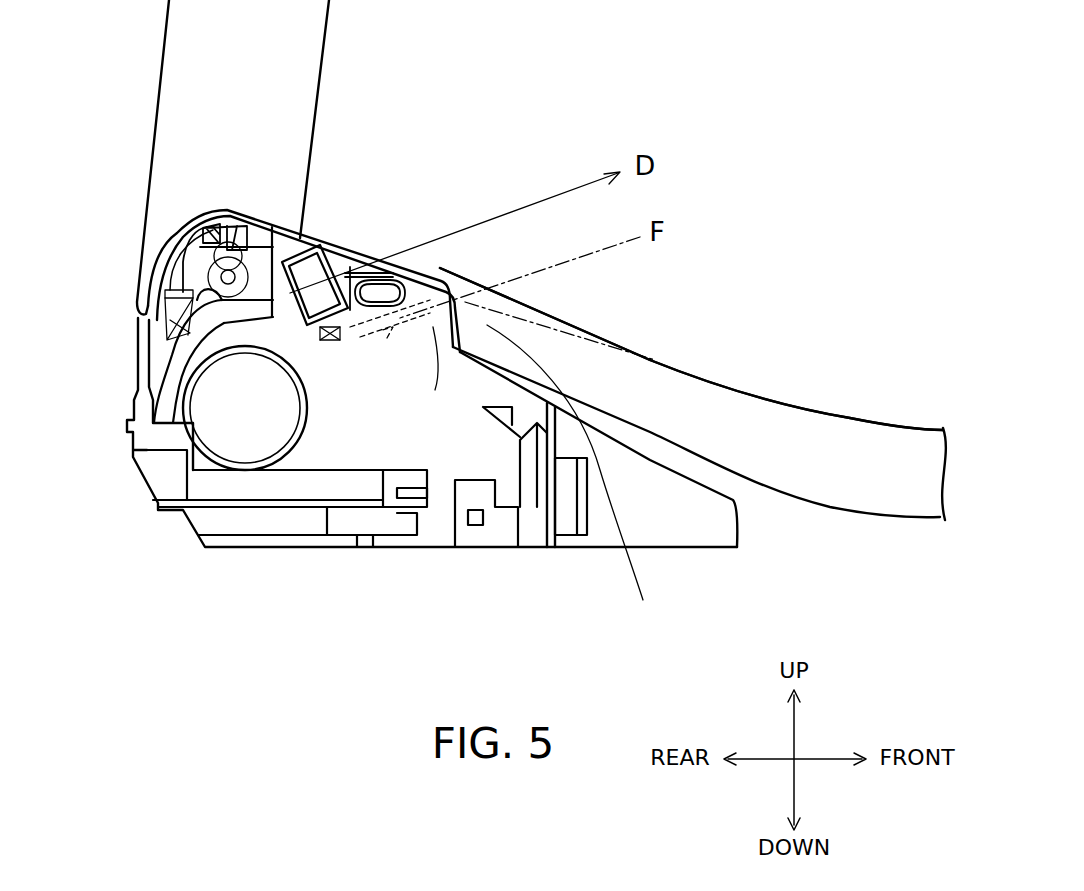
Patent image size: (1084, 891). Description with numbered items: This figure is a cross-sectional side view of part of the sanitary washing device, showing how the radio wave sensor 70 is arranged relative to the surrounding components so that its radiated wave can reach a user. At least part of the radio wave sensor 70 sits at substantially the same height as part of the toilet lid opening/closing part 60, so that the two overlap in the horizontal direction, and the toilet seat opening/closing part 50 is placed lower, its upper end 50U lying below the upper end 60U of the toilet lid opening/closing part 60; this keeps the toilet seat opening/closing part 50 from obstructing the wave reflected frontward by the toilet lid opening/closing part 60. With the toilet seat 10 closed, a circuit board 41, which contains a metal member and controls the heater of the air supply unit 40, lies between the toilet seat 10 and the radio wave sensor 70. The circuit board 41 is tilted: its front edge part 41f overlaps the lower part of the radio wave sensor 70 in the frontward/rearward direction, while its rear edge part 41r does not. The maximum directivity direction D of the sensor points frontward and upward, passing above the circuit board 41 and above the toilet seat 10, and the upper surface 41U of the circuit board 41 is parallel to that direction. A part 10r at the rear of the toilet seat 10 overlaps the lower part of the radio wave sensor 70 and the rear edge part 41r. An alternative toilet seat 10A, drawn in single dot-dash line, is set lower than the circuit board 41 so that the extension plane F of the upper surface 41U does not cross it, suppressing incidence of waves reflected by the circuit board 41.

The toilet seat 10 is at (813, 427).
The toilet seat 10A is at (548, 327).
The part at the rear part of the toilet seat 10r is at (580, 477).
The air supply unit 40 is at (243, 420).
The circuit board 41 is at (403, 340).
The upper surface of the circuit board 41U is at (395, 312).
The edge part at the rear of the circuit board 41r is at (365, 352).
The edge part at the front of the circuit board 41f is at (415, 330).
The toilet seat opening/closing part 50 is at (407, 295).
The upper end of the toilet seat opening/closing part 50U is at (315, 270).
The toilet lid opening/closing part 60 is at (262, 250).
The upper end of the toilet lid opening/closing part 60U is at (185, 235).
The radio wave sensor 70 is at (318, 262).